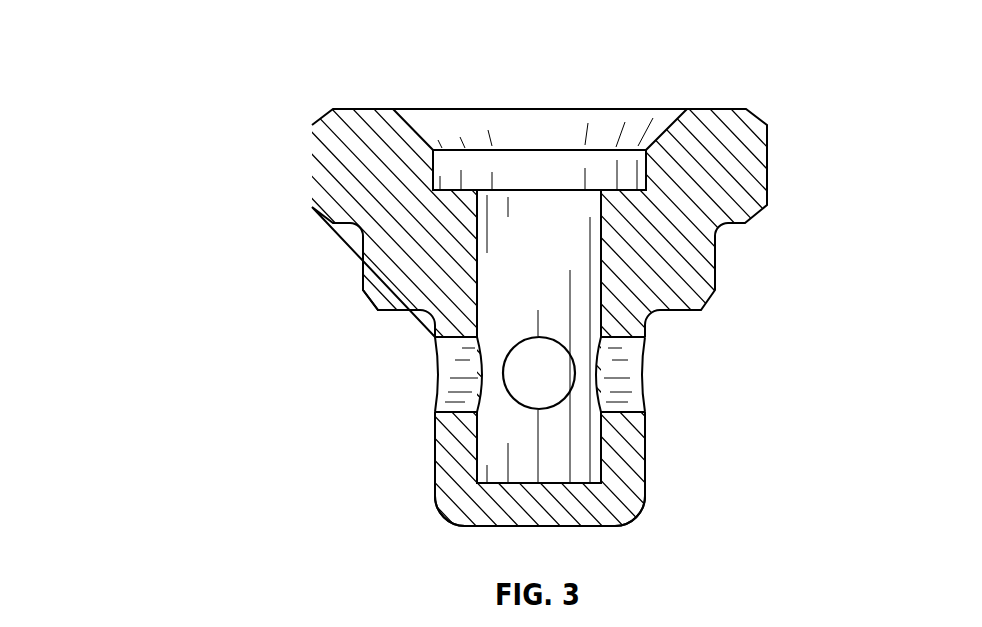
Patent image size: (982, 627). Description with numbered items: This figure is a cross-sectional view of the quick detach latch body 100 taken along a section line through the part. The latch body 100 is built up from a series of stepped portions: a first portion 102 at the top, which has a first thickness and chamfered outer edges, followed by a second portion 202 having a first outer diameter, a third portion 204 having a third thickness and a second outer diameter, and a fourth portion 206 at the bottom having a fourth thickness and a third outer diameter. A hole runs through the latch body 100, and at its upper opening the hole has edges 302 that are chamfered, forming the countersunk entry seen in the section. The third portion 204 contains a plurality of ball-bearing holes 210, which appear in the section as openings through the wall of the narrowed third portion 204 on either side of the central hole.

The latch body 100 is at (506, 304).
The first portion 102 is at (299, 167).
The second portion 202 is at (358, 258).
The third portion 204 is at (406, 403).
The fourth portion 206 is at (421, 501).
The ball-bearing holes 210 is at (522, 381).
The edges 302 is at (488, 127).